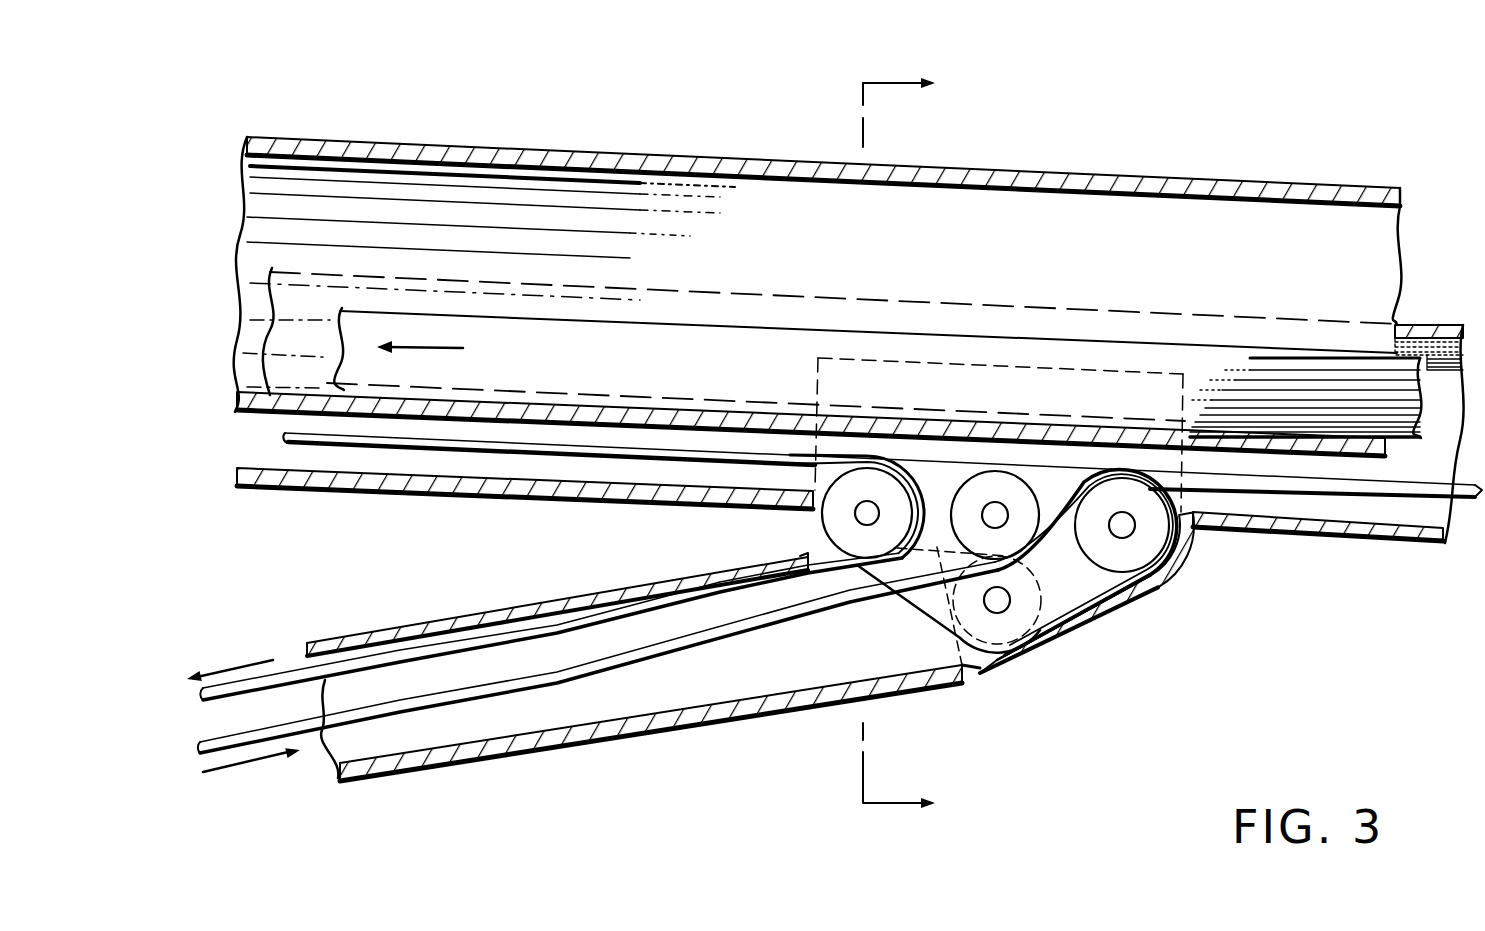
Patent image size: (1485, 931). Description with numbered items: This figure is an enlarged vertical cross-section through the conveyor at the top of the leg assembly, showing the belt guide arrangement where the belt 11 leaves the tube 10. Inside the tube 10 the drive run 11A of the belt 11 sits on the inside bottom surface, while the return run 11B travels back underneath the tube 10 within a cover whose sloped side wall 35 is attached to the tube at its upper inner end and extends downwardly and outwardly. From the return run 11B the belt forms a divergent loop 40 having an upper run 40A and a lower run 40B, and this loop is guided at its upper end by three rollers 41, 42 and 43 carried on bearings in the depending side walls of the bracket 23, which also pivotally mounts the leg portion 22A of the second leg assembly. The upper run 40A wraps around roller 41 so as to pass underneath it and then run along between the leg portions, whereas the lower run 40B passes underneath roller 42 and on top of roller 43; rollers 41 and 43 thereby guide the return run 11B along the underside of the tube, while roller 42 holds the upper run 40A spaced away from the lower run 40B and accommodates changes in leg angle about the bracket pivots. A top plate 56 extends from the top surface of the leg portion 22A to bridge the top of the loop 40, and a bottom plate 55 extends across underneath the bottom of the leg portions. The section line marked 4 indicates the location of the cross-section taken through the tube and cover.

The tube 10 is at (620, 145).
The belt 11 is at (1337, 368).
The drive run 11A is at (723, 387).
The return run 11B is at (487, 455).
The bracket 23 is at (1190, 372).
The sloped side wall 35 is at (1077, 330).
The roller 41 is at (833, 517).
The roller 42 is at (993, 487).
The roller 43 is at (1172, 558).
The divergent loop 40 is at (610, 640).
The upper run 40A is at (292, 667).
The lower run 40B is at (322, 750).
The top plate 56 is at (602, 590).
The bottom plate 55 is at (495, 762).
The leg portion 22A is at (613, 700).
The section line 4- 4 is at (914, 444).